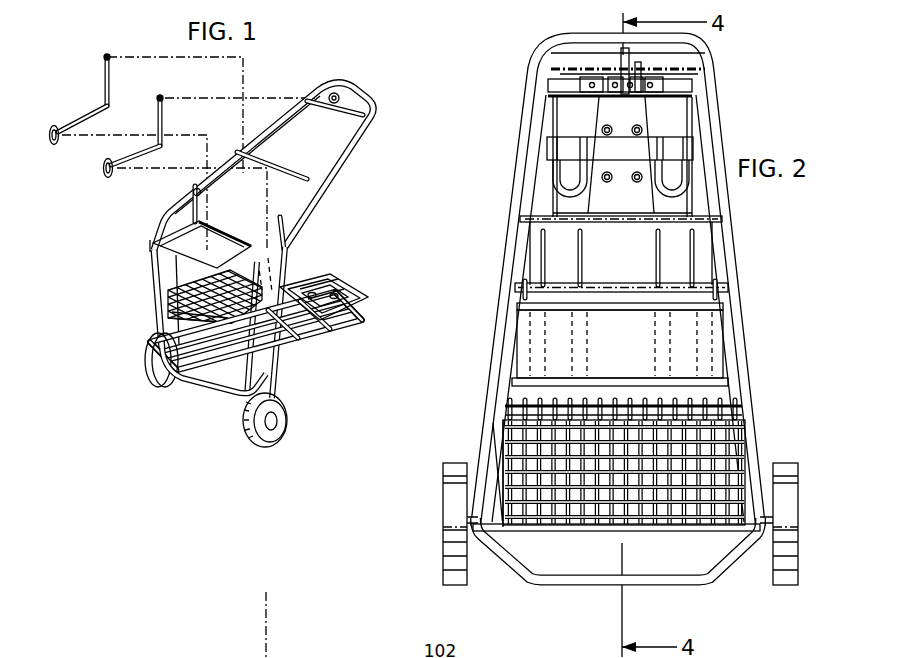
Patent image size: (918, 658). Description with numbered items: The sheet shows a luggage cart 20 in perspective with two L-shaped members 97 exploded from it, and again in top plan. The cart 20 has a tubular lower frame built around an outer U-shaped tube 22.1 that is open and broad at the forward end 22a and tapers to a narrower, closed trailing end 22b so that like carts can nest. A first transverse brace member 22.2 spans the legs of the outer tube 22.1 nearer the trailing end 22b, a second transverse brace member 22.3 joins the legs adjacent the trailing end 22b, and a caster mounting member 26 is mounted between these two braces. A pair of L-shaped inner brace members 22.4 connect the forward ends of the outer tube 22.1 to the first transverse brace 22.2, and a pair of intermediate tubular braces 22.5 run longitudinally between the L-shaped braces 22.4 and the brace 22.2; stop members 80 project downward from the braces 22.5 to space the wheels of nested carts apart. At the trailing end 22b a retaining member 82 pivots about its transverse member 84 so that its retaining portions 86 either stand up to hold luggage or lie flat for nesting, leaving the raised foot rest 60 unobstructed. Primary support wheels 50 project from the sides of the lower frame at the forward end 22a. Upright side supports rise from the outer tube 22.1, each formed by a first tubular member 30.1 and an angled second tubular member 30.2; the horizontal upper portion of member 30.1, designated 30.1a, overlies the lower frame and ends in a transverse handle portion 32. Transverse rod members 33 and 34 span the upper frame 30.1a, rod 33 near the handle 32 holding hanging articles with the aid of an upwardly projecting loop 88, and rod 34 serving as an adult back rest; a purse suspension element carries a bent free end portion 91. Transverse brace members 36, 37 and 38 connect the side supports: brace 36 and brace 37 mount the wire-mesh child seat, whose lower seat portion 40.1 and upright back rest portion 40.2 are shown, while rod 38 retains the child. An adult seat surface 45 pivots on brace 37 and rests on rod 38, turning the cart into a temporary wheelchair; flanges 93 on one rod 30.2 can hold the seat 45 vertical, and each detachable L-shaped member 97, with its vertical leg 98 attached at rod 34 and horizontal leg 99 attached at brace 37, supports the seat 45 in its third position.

In FIG. 1, the cart 20 is at (176, 448).
In FIG. 2, the cart 20 is at (426, 492).
In FIG. 1, the outer U-shaped tube 22.1 is at (294, 347).
In FIG. 2, the outer U-shaped tube 22.1 is at (727, 145).
In FIG. 1, the first transverse brace member 22.2 is at (334, 321).
In FIG. 2, the first transverse brace member 22.2 is at (545, 220).
In FIG. 1, the second transverse brace member 22.3 is at (308, 288).
In FIG. 2, the second transverse brace member 22.3 is at (578, 67).
In FIG. 1, the L-shaped inner brace members 22.4 is at (297, 359).
In FIG. 2, the L-shaped inner brace members 22.4 is at (586, 263).
In FIG. 1, the intermediate tubular braces 22.5 is at (313, 344).
In FIG. 2, the intermediate tubular braces 22.5 is at (700, 255).
In FIG. 1, the forward end 22a is at (186, 384).
In FIG. 1, the trailing end 22b is at (366, 290).
In FIG. 2, the trailing end 22b is at (531, 72).
In FIG. 1, the caster mounting member 26 is at (328, 295).
In FIG. 2, the caster mounting member 26 is at (637, 212).
In FIG. 1, the first tubular member of upright side support 30.1 is at (159, 268).
In FIG. 1, the upper frame portion 30.1a is at (352, 128).
In FIG. 2, the upper frame portion 30.1a is at (522, 246).
In FIG. 1, the second tubular member of upright side support 30.2 is at (202, 208).
In FIG. 1, the handle portion 32 is at (362, 96).
In FIG. 2, the handle portion 32 is at (600, 33).
In FIG. 1, the transverse rod member 33 is at (330, 110).
In FIG. 2, the transverse rod member 33 is at (676, 93).
In FIG. 1, the transverse rod member 34 is at (288, 166).
In FIG. 2, the transverse rod member 34 is at (628, 300).
In FIG. 1, the first transverse brace member 36 is at (170, 293).
In FIG. 1, the second transverse brace member 37 is at (228, 234).
In FIG. 2, the second transverse brace member 37 is at (742, 404).
In FIG. 1, the third transverse rod member 38 is at (152, 246).
In FIG. 2, the third transverse rod member 38 is at (578, 529).
In FIG. 1, the lower seat portion 40.1 is at (182, 300).
In FIG. 2, the lower seat portion 40.1 is at (512, 452).
In FIG. 1, the upright back rest portion 40.2 is at (285, 250).
In FIG. 1, the seat support surface 45 is at (202, 244).
In FIG. 2, the seat support surface 45 is at (630, 359).
In FIG. 1, the primary support wheels 50 is at (146, 368).
In FIG. 2, the primary support wheels 50 is at (444, 575).
In FIG. 1, the foot rest 60 is at (208, 398).
In FIG. 2, the foot rest 60 is at (578, 585).
In FIG. 1, the stop members 80 is at (292, 398).
In FIG. 1, the retaining member 82 is at (357, 299).
In FIG. 2, the retaining member 82 is at (694, 121).
In FIG. 2, the transverse member 84 is at (690, 82).
In FIG. 2, the retaining portions 86 is at (563, 193).
In FIG. 1, the loop 88 is at (337, 95).
In FIG. 2, the loop 88 is at (621, 83).
In FIG. 2, the free end portion 91 is at (640, 70).
In FIG. 2, the flanges 93 is at (497, 402).
In FIG. 1, the L-shaped member 97 is at (94, 106).
In FIG. 2, the L-shaped member 97 is at (726, 282).
In FIG. 1, the vertical leg 98 is at (110, 84).
In FIG. 1, the horizontal leg 99 is at (64, 125).